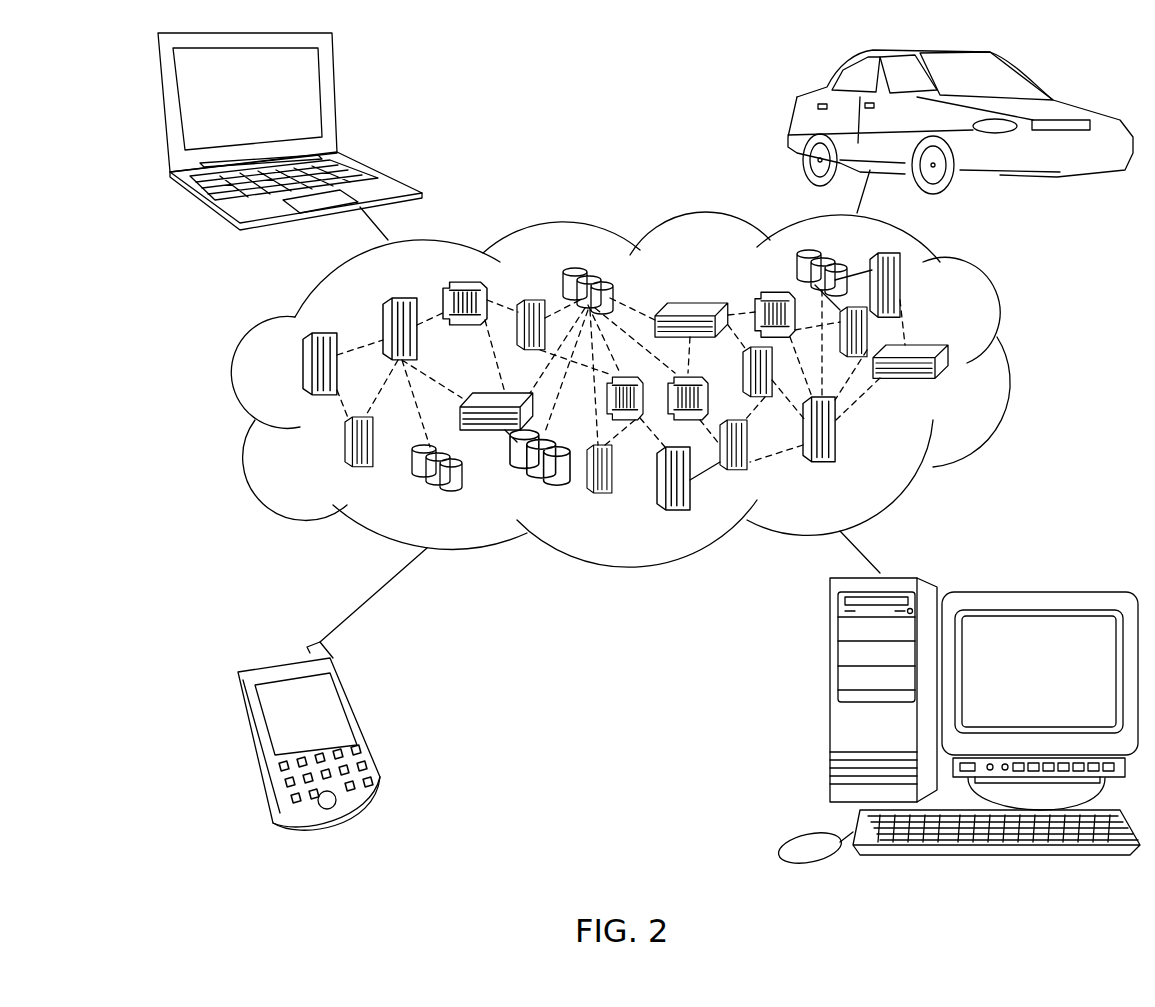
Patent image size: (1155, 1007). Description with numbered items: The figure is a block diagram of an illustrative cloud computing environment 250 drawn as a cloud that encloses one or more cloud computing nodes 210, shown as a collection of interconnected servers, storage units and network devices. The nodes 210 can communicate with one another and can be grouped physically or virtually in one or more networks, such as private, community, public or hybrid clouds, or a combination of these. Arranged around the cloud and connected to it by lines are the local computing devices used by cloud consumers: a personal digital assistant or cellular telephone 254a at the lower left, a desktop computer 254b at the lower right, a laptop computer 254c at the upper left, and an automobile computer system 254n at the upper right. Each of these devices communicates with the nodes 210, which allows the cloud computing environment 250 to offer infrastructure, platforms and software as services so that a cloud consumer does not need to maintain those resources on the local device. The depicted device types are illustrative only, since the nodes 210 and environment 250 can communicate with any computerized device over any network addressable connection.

The cloud computing environment 250 is at (1000, 305).
The cloud computing nodes 210 is at (967, 387).
The personal digital assistant or cellular telephone 254a is at (357, 708).
The desktop computer 254b is at (827, 703).
The laptop computer 254c is at (337, 93).
The automobile computer system 254n is at (800, 98).